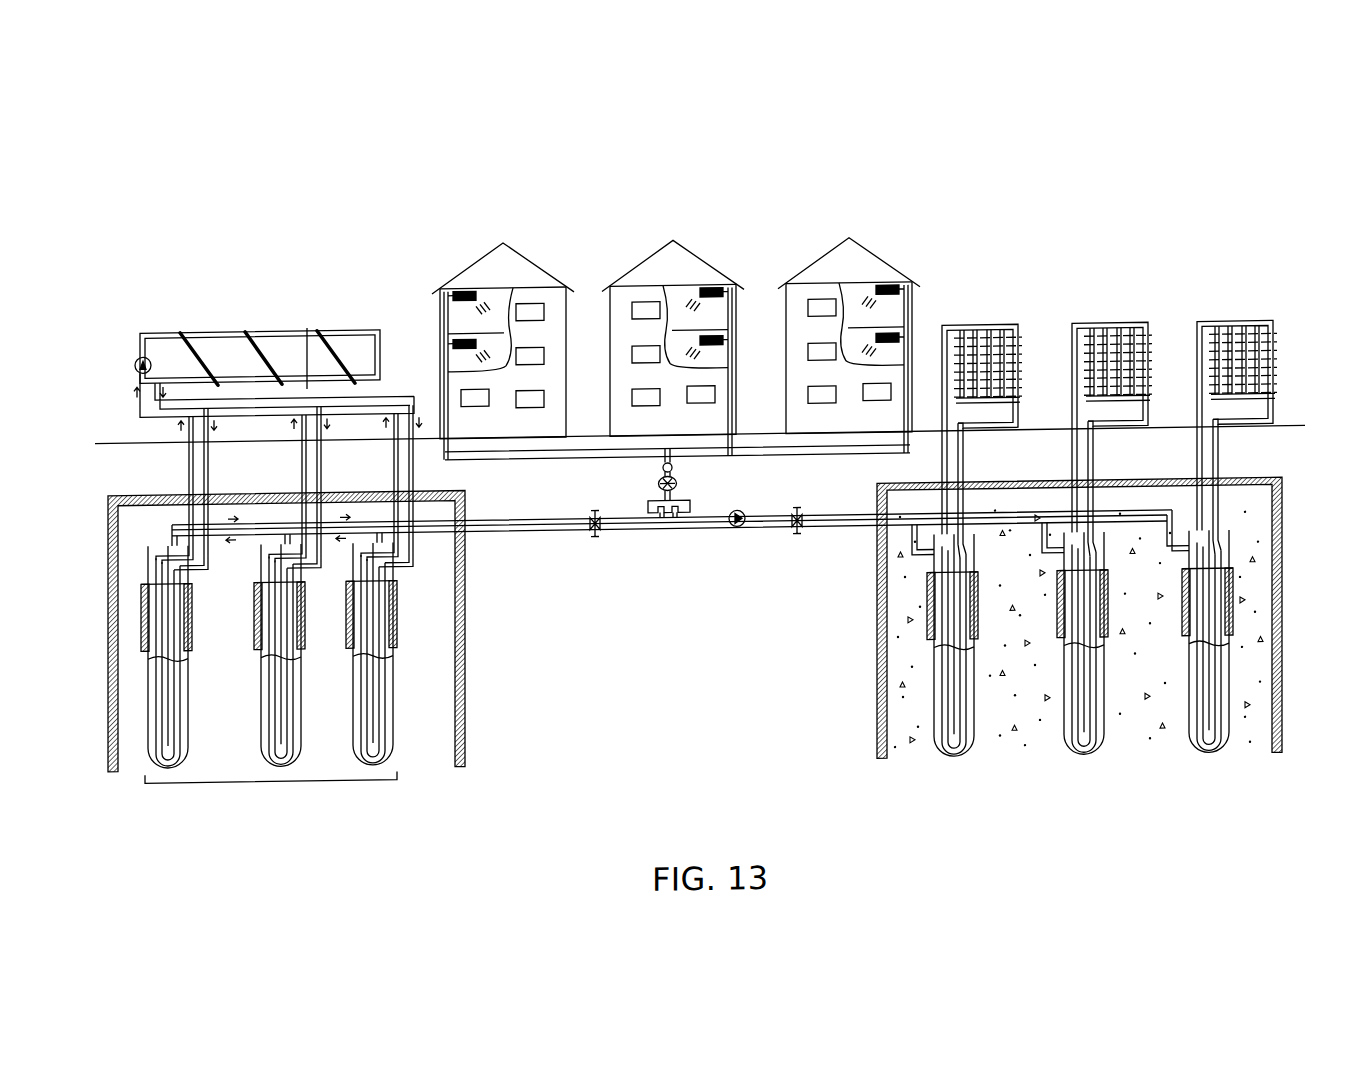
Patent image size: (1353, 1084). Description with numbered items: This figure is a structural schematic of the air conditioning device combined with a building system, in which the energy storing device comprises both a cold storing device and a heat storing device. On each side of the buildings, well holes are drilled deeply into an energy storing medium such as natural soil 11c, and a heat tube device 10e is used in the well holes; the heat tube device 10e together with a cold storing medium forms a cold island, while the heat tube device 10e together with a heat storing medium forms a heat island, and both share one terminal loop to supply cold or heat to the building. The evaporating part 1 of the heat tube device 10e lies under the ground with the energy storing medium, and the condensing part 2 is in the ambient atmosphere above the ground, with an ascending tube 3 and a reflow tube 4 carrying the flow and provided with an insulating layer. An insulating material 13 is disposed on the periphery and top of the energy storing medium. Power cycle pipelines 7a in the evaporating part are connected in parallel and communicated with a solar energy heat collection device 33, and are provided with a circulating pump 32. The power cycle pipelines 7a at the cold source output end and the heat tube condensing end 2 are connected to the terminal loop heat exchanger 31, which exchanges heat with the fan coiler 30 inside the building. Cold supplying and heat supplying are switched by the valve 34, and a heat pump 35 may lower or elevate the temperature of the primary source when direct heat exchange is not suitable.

The evaporating part 1 is at (392, 728).
The condensing part 2 is at (980, 342).
The ascending tube 3 is at (942, 364).
The reflow tube 4 is at (960, 470).
The power cycle pipelines 7a is at (158, 440).
The heat tube device 10e is at (1125, 319).
The natural soil 11c is at (1132, 715).
The insulating material 13 is at (463, 582).
The fan coiler 30 is at (457, 293).
The heat exchanger 31 is at (656, 509).
The circulating pump 32 is at (140, 350).
The solar energy heat collection device 33 is at (246, 323).
The valve 34 is at (597, 531).
The heat pump 35 is at (680, 481).